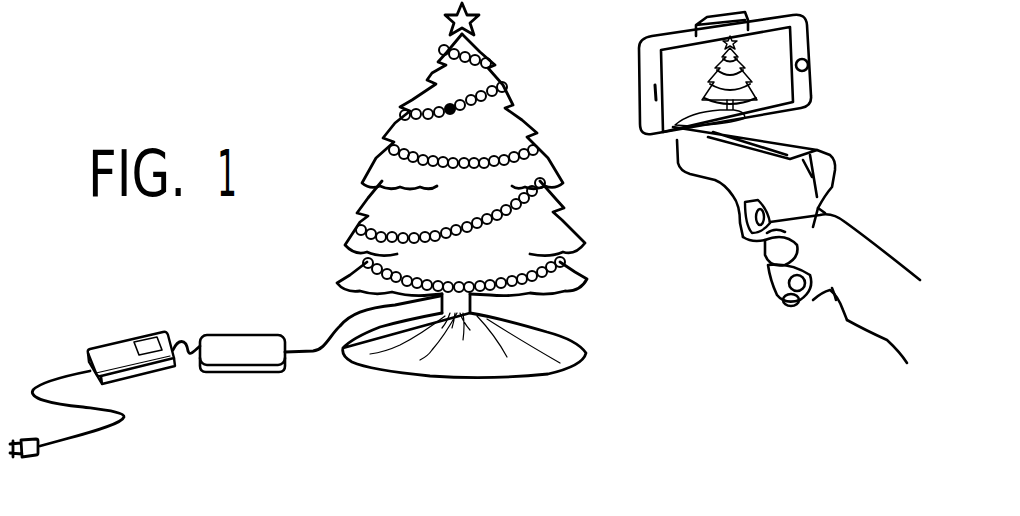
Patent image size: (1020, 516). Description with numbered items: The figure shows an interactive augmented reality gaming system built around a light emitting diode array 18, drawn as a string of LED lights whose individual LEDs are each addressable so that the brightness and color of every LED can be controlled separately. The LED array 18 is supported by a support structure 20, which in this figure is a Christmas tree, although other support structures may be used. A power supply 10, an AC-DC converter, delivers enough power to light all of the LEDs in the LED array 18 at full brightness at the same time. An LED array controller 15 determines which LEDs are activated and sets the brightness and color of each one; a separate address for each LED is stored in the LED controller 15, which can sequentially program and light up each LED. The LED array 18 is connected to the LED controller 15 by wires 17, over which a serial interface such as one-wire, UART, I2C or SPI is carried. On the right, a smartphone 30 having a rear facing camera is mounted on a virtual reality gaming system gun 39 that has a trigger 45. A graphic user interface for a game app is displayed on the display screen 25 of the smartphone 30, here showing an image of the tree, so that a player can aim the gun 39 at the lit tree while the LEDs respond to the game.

The power supply 10 is at (123, 342).
The LED array controller 15 is at (227, 372).
The wires 17 is at (338, 323).
The LED array 18 is at (444, 103).
The support structure 20 is at (563, 293).
The display screen 25 is at (701, 71).
The smartphone 30 is at (810, 43).
The VR gaming system gun 39 is at (818, 150).
The trigger 45 is at (743, 235).